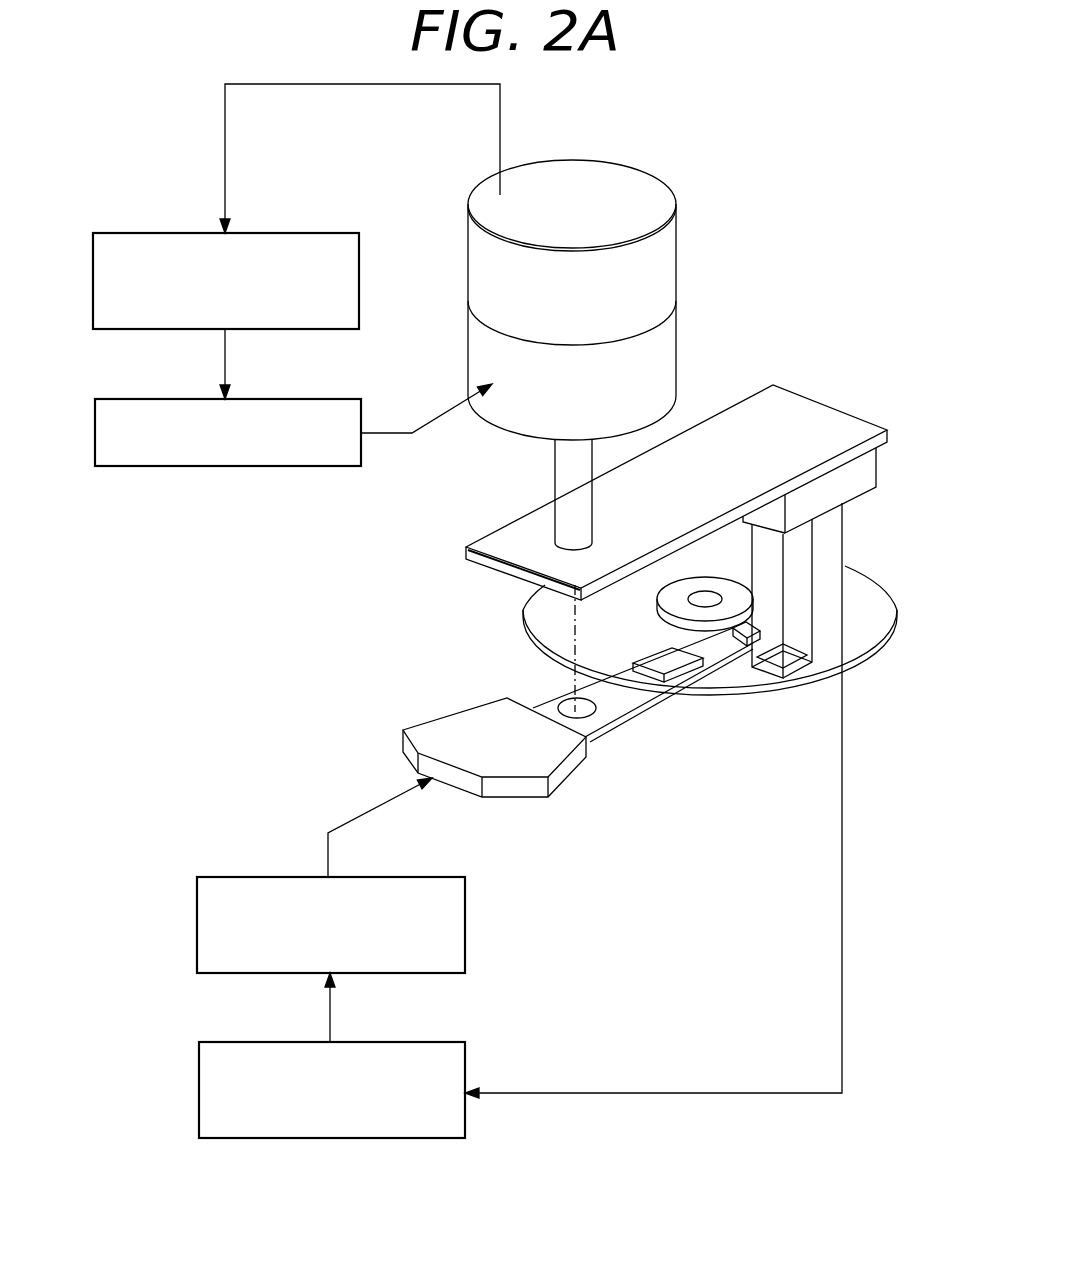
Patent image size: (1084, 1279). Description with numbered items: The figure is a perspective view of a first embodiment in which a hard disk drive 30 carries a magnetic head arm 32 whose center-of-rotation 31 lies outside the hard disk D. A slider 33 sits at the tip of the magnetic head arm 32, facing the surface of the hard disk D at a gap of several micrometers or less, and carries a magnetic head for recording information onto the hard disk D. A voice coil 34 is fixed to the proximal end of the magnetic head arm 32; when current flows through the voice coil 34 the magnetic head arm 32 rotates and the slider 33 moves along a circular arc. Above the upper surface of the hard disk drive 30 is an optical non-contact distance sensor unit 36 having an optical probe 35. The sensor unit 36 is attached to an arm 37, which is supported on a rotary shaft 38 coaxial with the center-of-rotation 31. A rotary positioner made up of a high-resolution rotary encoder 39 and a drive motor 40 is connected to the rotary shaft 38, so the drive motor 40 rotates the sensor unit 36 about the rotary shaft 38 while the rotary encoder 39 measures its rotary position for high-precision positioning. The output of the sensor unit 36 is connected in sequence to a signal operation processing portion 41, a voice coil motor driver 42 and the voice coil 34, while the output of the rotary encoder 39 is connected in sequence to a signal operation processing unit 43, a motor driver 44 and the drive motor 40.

The hard disk drive 30 is at (790, 255).
The center-of-rotation 31 is at (587, 713).
The magnetic head arm 32 is at (552, 702).
The slider 33 is at (741, 647).
The voice coil 34 is at (403, 740).
The optical probe 35 is at (813, 637).
The optical non-contact distance sensor unit 36 is at (868, 477).
The arm 37 is at (788, 412).
The rotary shaft 38 is at (560, 470).
The high-resolution rotary encoder 39 is at (677, 240).
The drive motor 40 is at (677, 342).
The signal operation processing portion 41 is at (250, 1042).
The voice coil motor driver 42 is at (243, 877).
The signal operation processing unit 43 is at (155, 233).
The motor driver 44 is at (158, 399).
The hard disk D is at (882, 602).